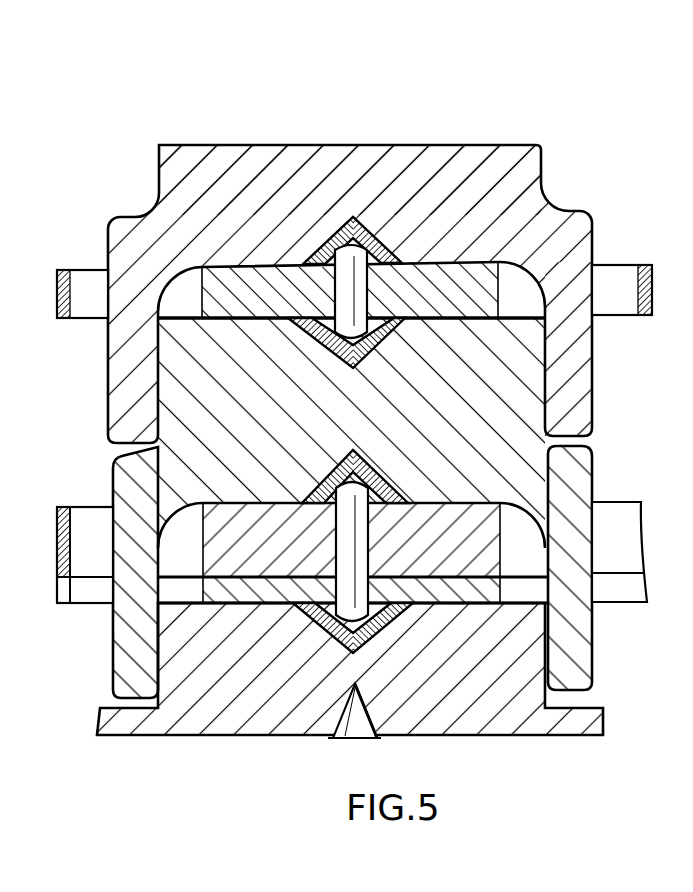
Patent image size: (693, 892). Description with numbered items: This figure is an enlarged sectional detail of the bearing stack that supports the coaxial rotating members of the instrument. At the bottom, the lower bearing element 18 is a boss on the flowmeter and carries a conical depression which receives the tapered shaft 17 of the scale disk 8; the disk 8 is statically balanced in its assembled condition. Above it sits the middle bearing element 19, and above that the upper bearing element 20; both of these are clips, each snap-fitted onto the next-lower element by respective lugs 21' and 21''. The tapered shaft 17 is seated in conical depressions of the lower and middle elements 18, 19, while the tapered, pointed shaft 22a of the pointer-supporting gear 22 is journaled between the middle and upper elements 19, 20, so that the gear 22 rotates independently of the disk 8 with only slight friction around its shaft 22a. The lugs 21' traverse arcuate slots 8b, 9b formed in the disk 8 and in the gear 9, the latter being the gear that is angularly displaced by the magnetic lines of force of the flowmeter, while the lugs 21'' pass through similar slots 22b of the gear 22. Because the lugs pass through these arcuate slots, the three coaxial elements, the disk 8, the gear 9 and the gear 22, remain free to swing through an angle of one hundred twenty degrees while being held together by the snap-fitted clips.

The scale disk 8 is at (230, 597).
The arcuate slot 8b is at (637, 586).
The gear 9 is at (480, 530).
The arcuate slot 9b is at (86, 518).
The tapered shaft 17 is at (360, 583).
The lower bearing element 18 is at (236, 720).
The middle bearing element 19 is at (274, 334).
The upper bearing element 20 is at (228, 160).
The lug 21' is at (381, 572).
The lug 21'' is at (382, 294).
The pointer-supporting gear 22 is at (482, 298).
The tapered shaft 22a is at (353, 255).
The arcuate slot 22b is at (86, 283).